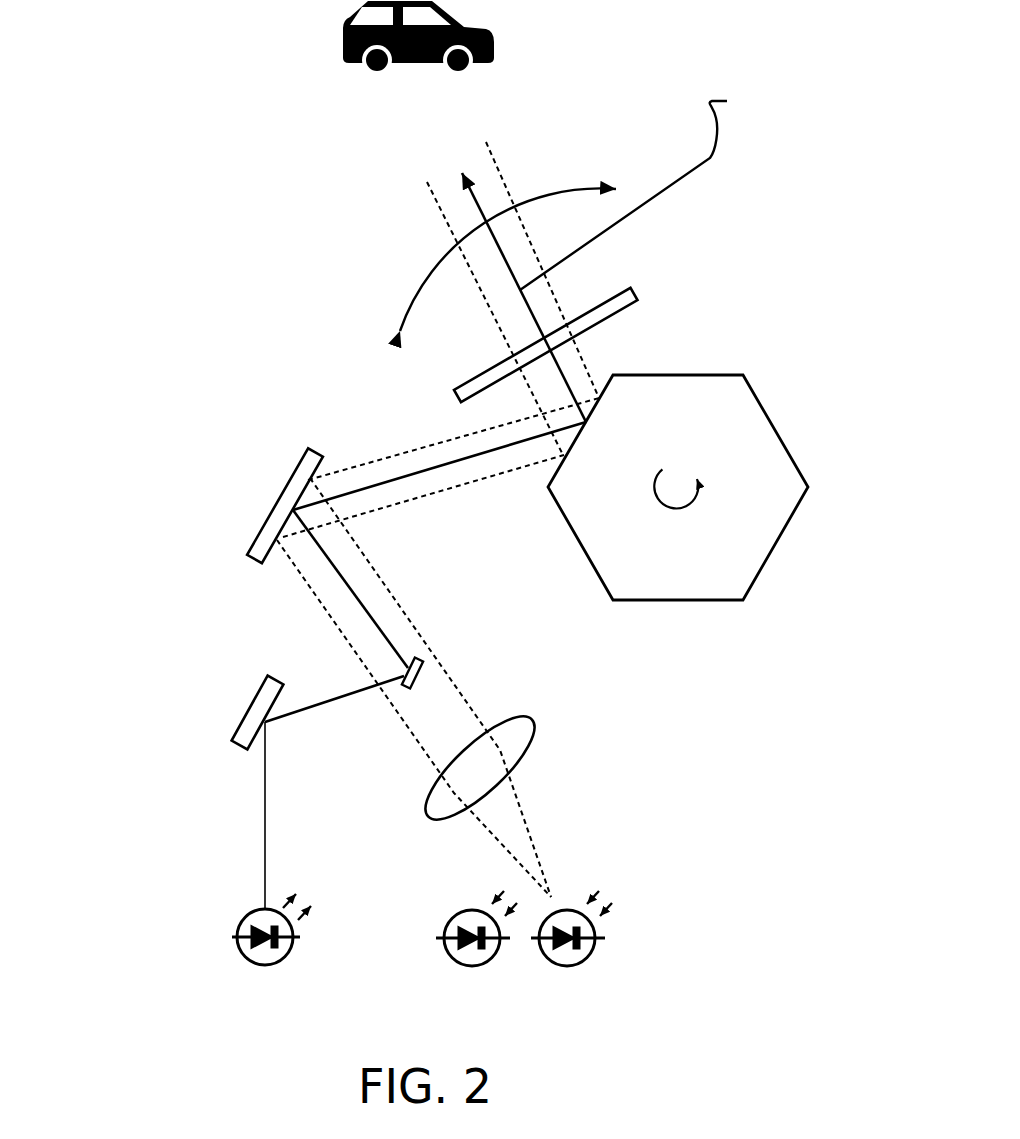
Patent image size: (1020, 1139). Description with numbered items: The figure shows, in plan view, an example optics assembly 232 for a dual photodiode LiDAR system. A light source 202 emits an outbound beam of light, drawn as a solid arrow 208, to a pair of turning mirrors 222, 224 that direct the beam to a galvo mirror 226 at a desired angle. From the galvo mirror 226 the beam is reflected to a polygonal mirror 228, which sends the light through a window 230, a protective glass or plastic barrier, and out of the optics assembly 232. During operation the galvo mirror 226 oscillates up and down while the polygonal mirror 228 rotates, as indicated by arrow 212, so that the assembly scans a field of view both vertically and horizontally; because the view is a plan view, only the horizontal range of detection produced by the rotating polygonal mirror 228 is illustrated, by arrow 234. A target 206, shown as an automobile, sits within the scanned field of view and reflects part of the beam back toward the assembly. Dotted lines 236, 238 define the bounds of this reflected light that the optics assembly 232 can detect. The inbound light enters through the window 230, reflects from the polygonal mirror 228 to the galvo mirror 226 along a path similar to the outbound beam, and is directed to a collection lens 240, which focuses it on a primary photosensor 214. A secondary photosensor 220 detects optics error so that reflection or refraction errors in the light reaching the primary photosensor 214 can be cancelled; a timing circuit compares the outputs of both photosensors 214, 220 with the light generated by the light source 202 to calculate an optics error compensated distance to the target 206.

The light source 202 is at (271, 949).
The target 206 is at (418, 57).
The outbound beam of light 208 is at (649, 192).
The arrow 212 is at (662, 488).
The primary photosensor 214 is at (571, 947).
The secondary photosensor 220 is at (476, 947).
The turning mirror 222 is at (237, 722).
The turning mirror 224 is at (423, 672).
The galvo mirror 226 is at (265, 520).
The polygonal mirror 228 is at (678, 487).
The window 230 is at (640, 290).
The optics assembly 232 is at (156, 137).
The arrow 234 is at (586, 188).
The dotted line 236 is at (500, 167).
The dotted line 238 is at (440, 209).
The collection lens 240 is at (523, 758).